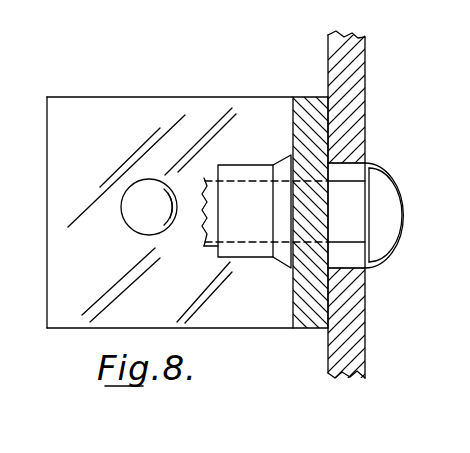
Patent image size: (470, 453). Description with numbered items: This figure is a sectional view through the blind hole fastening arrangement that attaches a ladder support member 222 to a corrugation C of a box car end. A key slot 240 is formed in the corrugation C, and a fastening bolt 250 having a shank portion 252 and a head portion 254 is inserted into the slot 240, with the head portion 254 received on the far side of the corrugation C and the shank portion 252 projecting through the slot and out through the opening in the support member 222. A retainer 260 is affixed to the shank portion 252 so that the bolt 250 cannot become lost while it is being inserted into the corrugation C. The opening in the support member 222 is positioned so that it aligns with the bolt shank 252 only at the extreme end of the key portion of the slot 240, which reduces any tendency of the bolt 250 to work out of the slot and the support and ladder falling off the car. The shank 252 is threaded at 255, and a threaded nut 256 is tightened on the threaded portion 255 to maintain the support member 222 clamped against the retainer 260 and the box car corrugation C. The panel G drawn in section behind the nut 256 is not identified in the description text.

The support member 222 is at (308, 109).
The corrugation C is at (352, 352).
The shank portion 252 is at (338, 165).
The key slot 240 is at (338, 262).
The fastening bolt 250 is at (462, 183).
The head portion 254 is at (367, 262).
The threaded nut 256 is at (242, 258).
The retainer 260 is at (290, 163).
The threaded portion 255 is at (220, 257).
The glass panel G is at (187, 212).